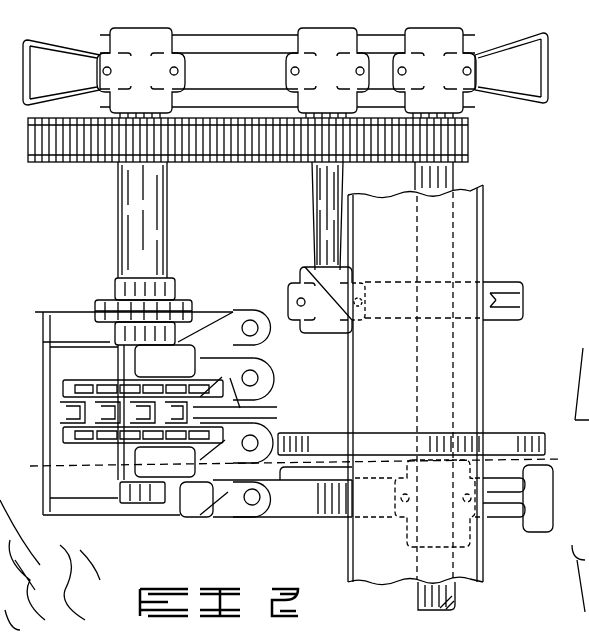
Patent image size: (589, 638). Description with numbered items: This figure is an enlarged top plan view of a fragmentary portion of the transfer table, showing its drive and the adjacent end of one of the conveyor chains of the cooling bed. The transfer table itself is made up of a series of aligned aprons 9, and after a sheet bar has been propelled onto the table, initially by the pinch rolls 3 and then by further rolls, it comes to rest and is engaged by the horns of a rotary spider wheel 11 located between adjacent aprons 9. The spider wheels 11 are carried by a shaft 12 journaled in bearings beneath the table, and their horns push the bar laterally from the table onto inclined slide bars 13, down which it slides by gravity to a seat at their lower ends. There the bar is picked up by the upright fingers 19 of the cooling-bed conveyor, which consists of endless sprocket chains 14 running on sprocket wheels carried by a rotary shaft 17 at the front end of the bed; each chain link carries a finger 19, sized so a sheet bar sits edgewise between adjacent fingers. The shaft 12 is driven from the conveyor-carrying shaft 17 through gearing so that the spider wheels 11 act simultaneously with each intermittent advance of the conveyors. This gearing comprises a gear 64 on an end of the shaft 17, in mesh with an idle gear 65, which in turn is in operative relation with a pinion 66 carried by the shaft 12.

The pinch rolls 3 is at (545, 461).
The aprons 9 is at (465, 249).
The rotary spider wheels 11 is at (492, 440).
The shaft 12 is at (458, 598).
The inclined slide bars 13 is at (287, 512).
The endless sprocket chains 14 is at (52, 410).
The rotary shaft 17 is at (140, 500).
The upright fingers 19 is at (205, 393).
The gear 64 is at (83, 163).
The idle gear 65 is at (290, 165).
The pinion 66 is at (470, 140).